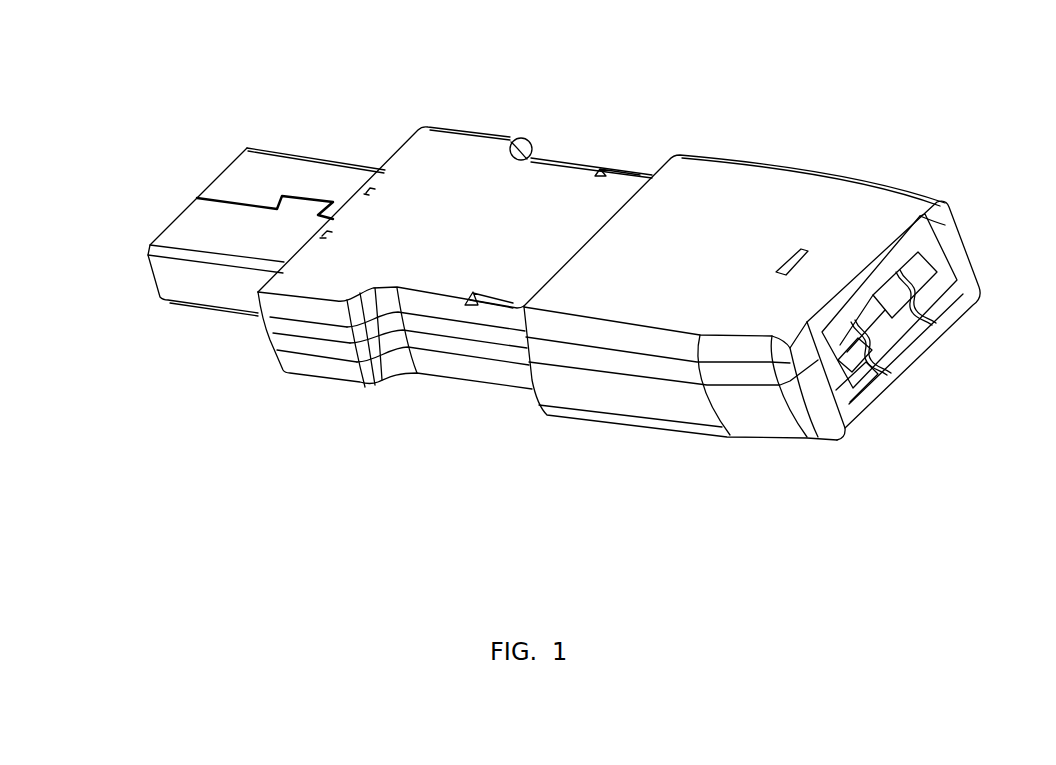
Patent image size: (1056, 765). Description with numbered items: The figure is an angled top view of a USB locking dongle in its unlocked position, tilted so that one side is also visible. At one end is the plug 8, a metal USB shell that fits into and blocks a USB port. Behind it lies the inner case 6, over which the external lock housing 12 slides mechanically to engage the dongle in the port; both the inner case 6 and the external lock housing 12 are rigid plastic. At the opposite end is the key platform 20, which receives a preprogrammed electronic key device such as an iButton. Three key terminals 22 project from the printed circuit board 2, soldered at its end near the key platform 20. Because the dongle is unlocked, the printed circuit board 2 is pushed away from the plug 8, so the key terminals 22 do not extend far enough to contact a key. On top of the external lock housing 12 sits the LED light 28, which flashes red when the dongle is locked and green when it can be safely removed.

The printed circuit board 2 is at (887, 298).
The inner case 6 is at (454, 197).
The plug 8 is at (302, 166).
The external lock housing 12 is at (772, 264).
The key platform 20 is at (863, 382).
The key terminals 22 is at (897, 348).
The LED light 28 is at (806, 249).